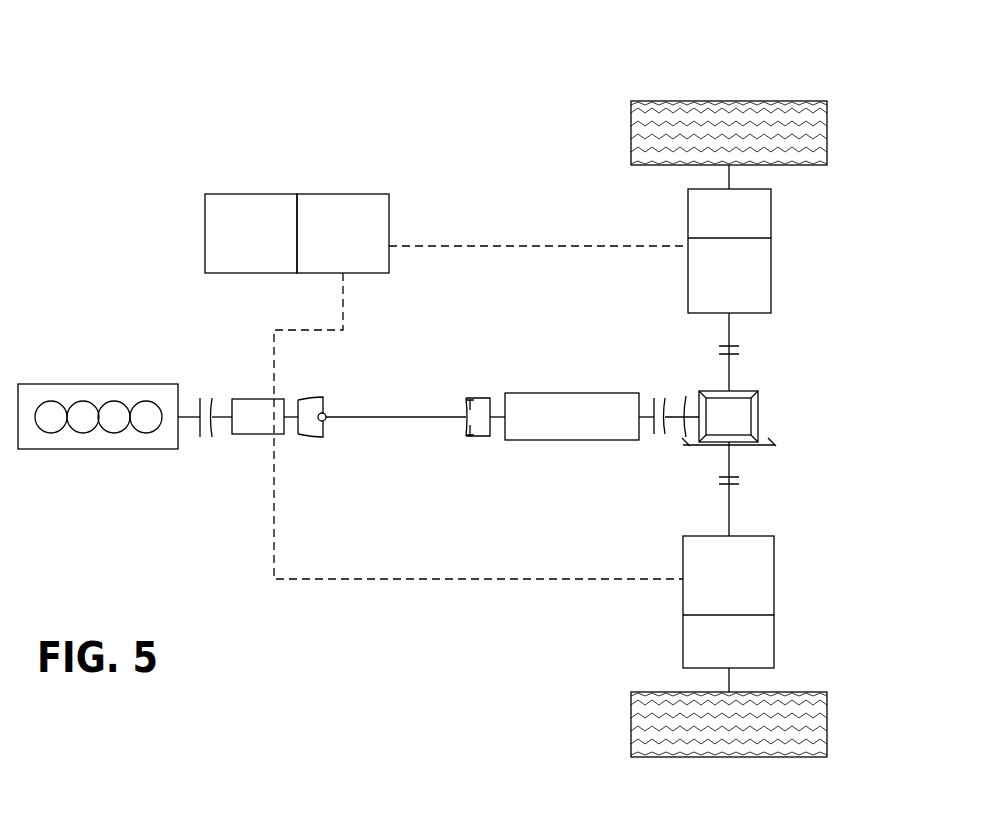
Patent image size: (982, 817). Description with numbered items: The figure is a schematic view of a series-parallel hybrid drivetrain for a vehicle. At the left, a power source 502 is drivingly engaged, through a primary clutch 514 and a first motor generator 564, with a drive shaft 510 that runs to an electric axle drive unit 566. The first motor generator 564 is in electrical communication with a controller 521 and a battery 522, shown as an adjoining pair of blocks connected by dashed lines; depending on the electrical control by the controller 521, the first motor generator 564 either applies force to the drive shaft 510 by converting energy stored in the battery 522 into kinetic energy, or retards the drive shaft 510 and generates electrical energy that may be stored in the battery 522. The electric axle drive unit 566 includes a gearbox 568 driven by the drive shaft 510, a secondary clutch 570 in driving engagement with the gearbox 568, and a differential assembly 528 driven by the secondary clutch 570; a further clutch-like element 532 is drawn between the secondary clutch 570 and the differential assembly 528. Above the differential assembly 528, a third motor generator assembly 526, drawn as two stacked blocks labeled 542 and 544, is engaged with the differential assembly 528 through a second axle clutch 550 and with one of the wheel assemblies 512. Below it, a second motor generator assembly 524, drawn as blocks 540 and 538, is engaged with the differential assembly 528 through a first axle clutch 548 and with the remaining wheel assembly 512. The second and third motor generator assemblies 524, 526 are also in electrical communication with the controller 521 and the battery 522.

The power source 502 is at (52, 384).
The primary clutch 514 is at (217, 435).
The first motor generator 564 is at (244, 399).
The drive shaft 510 is at (410, 406).
The gearbox 568 is at (557, 393).
The secondary clutch 570 is at (653, 410).
The clutch 532 is at (672, 410).
The differential assembly 528 is at (761, 417).
The second axle clutch 550 is at (741, 350).
The first axle clutch 548 is at (741, 481).
The third motor generator assembly 526 is at (772, 244).
The electric machine 542 is at (749, 227).
The gear set 544 is at (749, 290).
The second motor generator assembly 524 is at (781, 602).
The gear set 540 is at (749, 587).
The electric machine 538 is at (749, 654).
The wheel assemblies 512 is at (827, 130).
The battery 522 is at (250, 194).
The controller 521 is at (338, 194).
The electric axle drive unit 566 is at (591, 190).